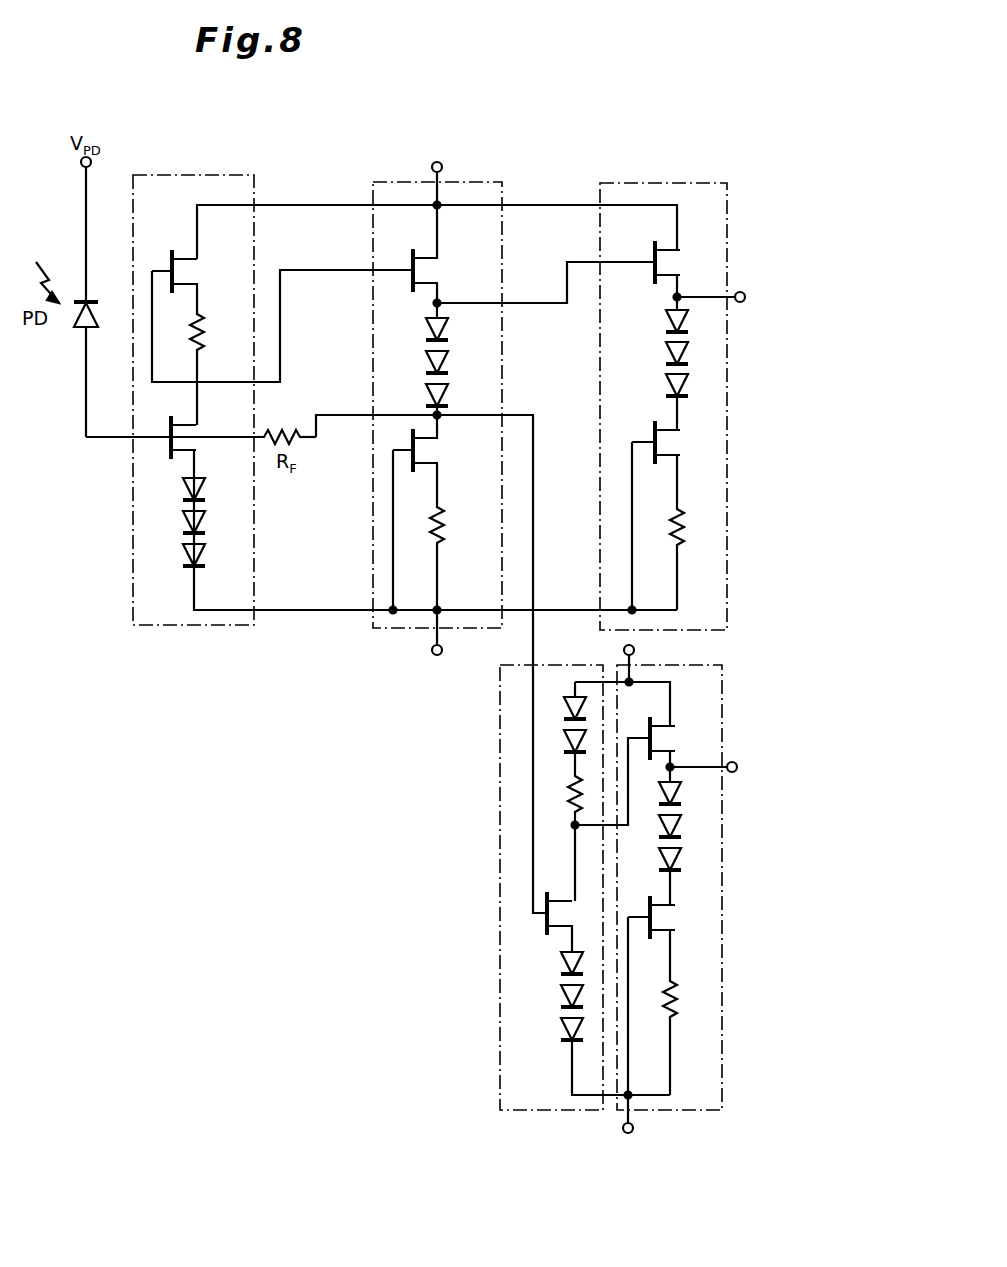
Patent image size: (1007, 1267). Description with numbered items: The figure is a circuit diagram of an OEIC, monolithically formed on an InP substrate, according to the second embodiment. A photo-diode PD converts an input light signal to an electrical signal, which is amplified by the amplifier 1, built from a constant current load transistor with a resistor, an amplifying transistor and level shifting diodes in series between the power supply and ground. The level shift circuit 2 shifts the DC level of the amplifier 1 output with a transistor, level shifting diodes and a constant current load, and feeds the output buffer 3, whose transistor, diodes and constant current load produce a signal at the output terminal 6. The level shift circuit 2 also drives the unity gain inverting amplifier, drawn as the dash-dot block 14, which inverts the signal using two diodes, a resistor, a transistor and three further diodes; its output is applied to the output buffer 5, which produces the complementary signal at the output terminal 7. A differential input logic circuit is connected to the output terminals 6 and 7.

The amplifier 1 is at (208, 176).
The level shift circuit 2 is at (377, 183).
The output buffer 3 is at (680, 184).
The output buffer 5 is at (727, 746).
The output terminal 6 is at (745, 292).
The output terminal 7 is at (736, 776).
The level shift circuit 14 is at (498, 764).